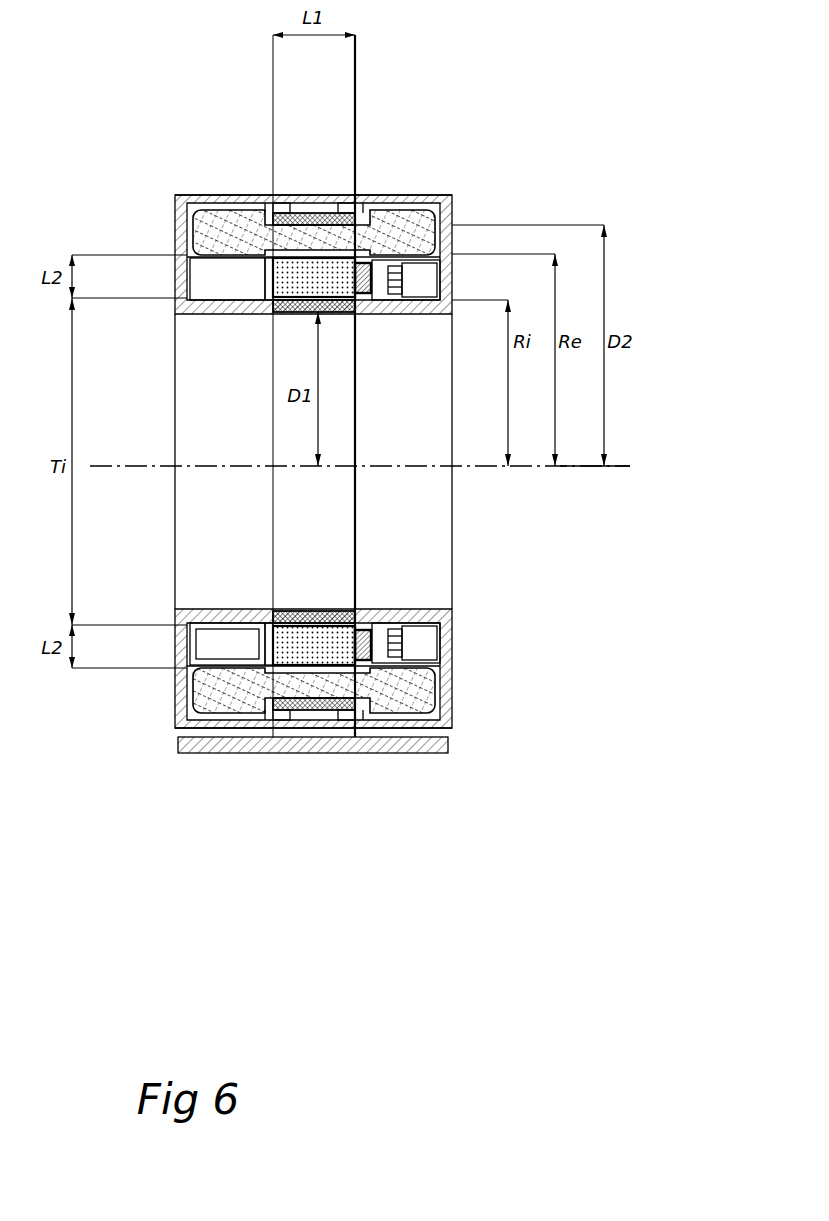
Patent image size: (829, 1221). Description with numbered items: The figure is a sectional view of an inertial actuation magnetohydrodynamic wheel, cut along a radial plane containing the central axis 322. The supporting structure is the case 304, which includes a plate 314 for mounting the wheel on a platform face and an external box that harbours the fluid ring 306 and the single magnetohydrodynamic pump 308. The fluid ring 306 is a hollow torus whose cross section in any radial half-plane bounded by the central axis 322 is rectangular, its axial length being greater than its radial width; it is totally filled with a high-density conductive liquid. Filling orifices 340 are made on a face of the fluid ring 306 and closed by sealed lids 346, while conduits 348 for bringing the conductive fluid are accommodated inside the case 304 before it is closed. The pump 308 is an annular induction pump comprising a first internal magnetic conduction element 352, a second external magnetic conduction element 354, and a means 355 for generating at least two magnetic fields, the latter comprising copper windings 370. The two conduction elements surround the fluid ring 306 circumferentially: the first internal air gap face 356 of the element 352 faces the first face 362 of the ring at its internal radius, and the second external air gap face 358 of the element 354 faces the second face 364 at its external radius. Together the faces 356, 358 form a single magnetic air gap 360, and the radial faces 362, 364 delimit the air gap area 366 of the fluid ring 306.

The case 304 is at (196, 196).
The fluid ring 306 is at (280, 210).
The magnetohydrodynamic pump 308 is at (505, 734).
The plate 314 is at (228, 755).
The central axis 322 is at (625, 462).
The filling orifices 340 is at (363, 258).
The sealed lids 346 is at (382, 216).
The conduits 348 is at (415, 280).
The first internal magnetic conduction element 352 is at (335, 313).
The second external magnetic conduction element 354 is at (325, 212).
The means for generating at least two magnetic fields 355 is at (133, 741).
The first internal air gap face 356 is at (312, 612).
The second external air gap face 358 is at (345, 706).
The magnetic air gap 360 is at (290, 630).
The first face 362 is at (294, 314).
The second face 364 is at (284, 206).
The air gap area 366 is at (235, 635).
The windings of electric conductors 370 is at (215, 232).